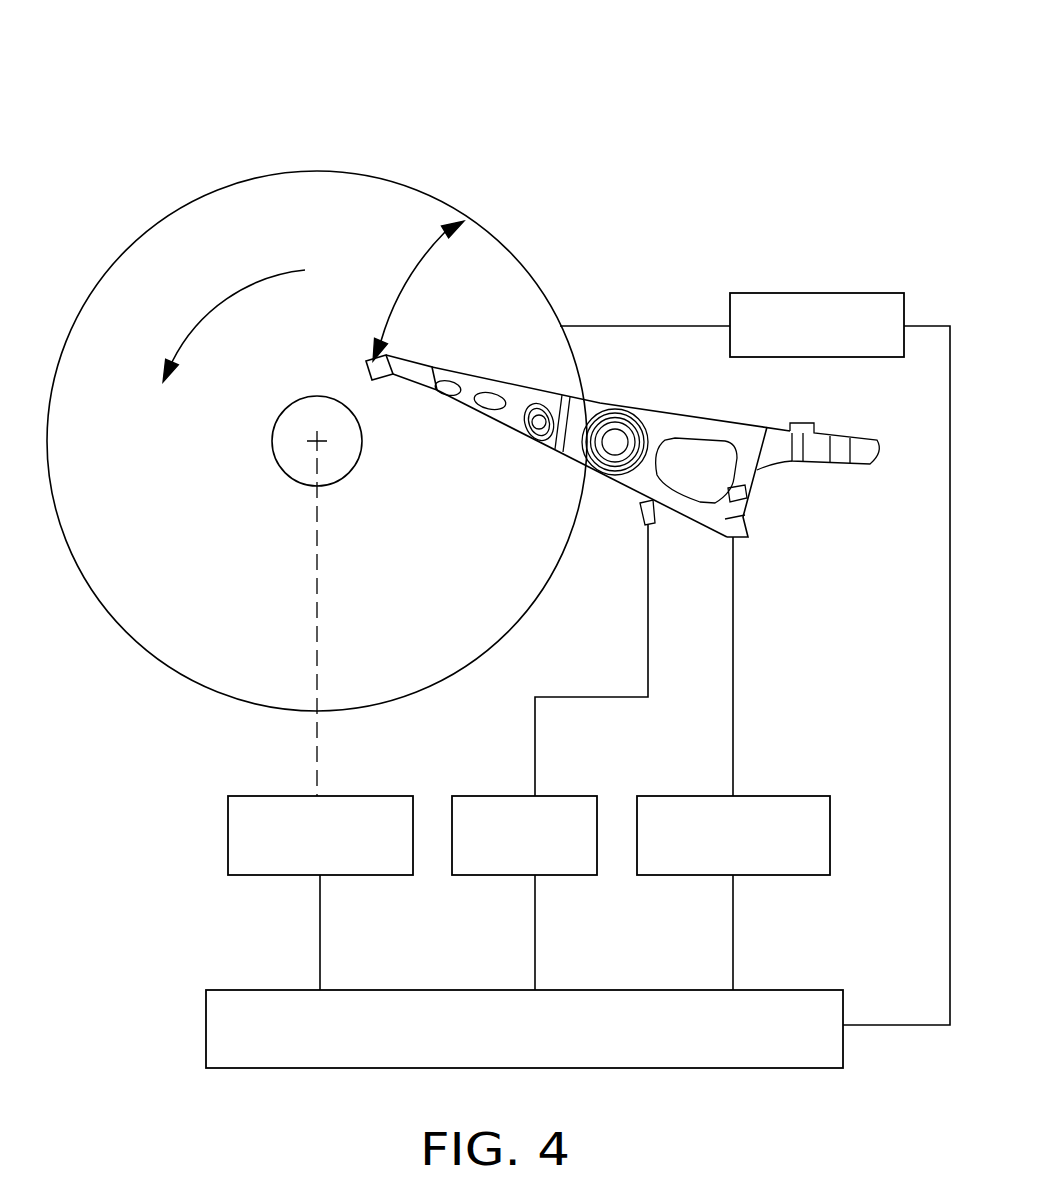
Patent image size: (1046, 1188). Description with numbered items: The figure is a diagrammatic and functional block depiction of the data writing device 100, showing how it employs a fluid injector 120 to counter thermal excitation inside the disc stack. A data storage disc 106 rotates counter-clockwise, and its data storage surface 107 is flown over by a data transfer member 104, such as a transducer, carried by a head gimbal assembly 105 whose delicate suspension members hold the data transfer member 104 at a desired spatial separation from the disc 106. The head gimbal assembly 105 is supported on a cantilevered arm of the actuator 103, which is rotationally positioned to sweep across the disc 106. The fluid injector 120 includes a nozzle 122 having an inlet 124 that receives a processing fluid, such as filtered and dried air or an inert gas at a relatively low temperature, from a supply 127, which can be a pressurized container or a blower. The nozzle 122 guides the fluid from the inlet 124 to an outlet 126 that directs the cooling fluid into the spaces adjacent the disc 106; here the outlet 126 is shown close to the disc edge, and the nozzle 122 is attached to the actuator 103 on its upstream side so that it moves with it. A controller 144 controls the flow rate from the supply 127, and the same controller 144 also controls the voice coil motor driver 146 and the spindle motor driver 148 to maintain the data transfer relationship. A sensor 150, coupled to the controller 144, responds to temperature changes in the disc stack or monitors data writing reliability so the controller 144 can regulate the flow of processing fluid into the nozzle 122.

The data writing device 100 is at (440, 95).
The data storage disc 106 is at (223, 190).
The data storage surface 107 is at (187, 573).
The data transfer member 104 is at (367, 357).
The head gimbal assembly 105 is at (405, 390).
The actuator 103 is at (515, 424).
The outlet 126 is at (583, 463).
The inlet 124 is at (643, 527).
The nozzle 122 is at (660, 513).
The fluid injector 120 is at (572, 496).
The supply 127 is at (555, 790).
The voice coil motor driver 146 is at (832, 836).
The spindle motor driver 148 is at (228, 838).
The controller 144 is at (207, 1022).
The sensor 150 is at (805, 292).